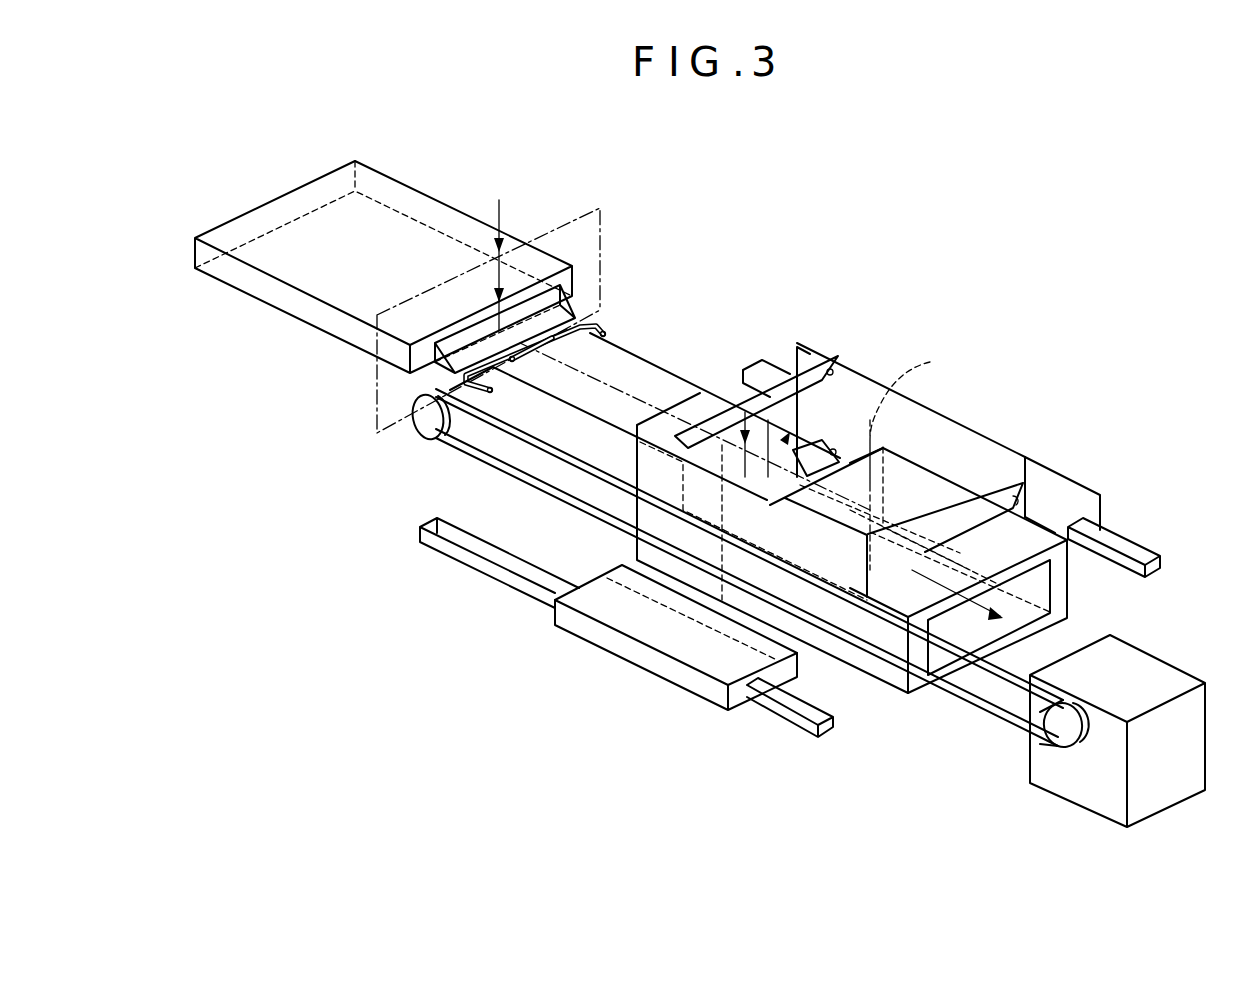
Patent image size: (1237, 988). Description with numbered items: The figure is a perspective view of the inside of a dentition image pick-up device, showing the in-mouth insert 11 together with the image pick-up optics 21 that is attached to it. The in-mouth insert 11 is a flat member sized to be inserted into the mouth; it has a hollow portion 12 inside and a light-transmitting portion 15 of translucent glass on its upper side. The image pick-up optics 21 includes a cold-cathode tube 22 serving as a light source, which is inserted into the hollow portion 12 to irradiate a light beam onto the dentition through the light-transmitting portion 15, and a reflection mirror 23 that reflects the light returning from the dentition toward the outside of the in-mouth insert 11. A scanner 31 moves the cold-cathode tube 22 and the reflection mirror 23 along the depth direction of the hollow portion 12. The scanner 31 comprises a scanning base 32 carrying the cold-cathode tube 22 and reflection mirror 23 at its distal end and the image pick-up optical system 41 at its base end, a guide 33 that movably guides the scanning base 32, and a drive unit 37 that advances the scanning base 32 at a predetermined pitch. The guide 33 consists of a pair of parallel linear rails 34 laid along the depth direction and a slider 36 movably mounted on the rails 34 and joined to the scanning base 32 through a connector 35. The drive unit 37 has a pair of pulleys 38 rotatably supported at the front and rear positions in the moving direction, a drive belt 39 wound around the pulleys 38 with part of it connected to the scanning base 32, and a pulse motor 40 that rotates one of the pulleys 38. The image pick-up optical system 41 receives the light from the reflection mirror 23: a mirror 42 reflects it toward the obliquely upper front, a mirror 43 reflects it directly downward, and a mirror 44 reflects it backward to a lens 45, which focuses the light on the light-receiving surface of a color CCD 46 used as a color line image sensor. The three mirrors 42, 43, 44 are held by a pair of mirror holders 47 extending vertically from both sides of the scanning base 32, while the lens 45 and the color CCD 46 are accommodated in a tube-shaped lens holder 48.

The in-mouth insert 11 is at (270, 305).
The hollow portion 12 is at (422, 353).
The light-transmitting portion 15 is at (410, 187).
The image pick-up optics 21 is at (873, 222).
The cold-cathode tube 22 is at (603, 331).
The reflection mirror 23 is at (596, 300).
The scanner 31 is at (850, 785).
The scanning base 32 is at (587, 410).
The guide 33 is at (774, 604).
The linear rails 34 is at (500, 578).
The connector 35 is at (717, 665).
The slider 36 is at (837, 579).
The drive unit 37 is at (1044, 855).
The pulleys 38 is at (425, 432).
The drive belt 39 is at (958, 702).
The pulse motor 40 is at (1077, 797).
The image pick-up optical system 41 is at (1108, 322).
The mirror 42 is at (997, 487).
The mirror 43 is at (807, 363).
The mirror 44 is at (827, 442).
The lens 45 is at (893, 395).
The color CCD 46 is at (1037, 583).
The mirror holders 47 is at (600, 470).
The lens holder 48 is at (1053, 630).